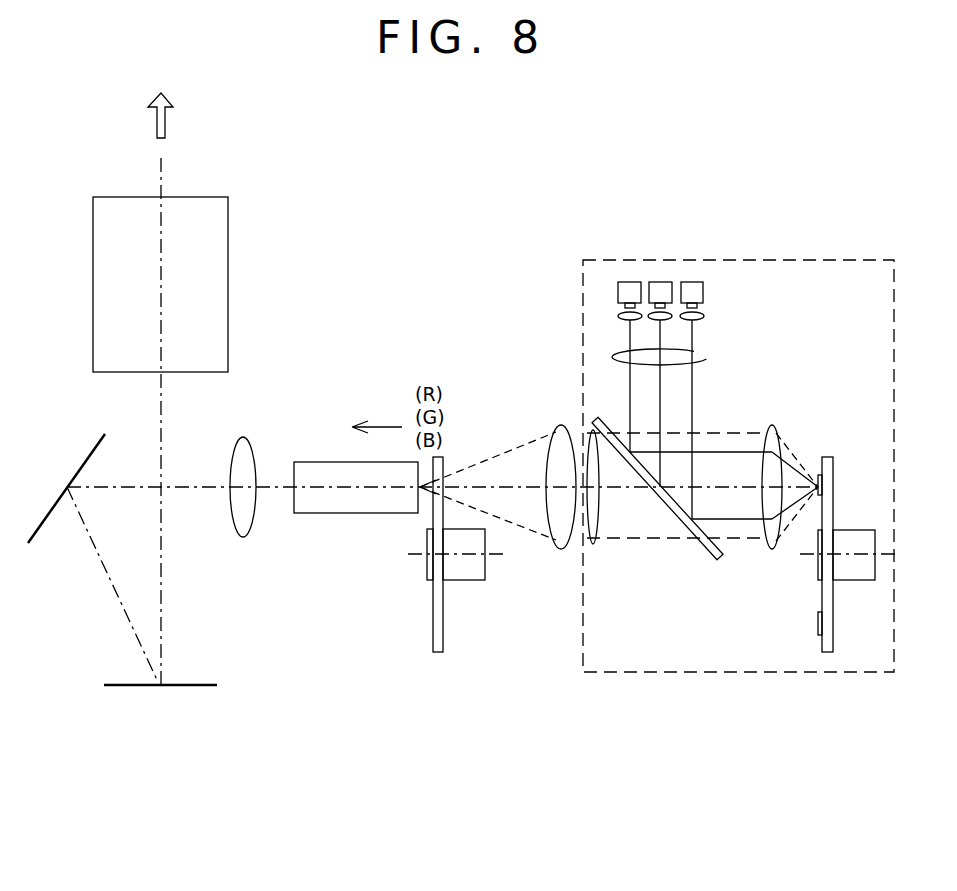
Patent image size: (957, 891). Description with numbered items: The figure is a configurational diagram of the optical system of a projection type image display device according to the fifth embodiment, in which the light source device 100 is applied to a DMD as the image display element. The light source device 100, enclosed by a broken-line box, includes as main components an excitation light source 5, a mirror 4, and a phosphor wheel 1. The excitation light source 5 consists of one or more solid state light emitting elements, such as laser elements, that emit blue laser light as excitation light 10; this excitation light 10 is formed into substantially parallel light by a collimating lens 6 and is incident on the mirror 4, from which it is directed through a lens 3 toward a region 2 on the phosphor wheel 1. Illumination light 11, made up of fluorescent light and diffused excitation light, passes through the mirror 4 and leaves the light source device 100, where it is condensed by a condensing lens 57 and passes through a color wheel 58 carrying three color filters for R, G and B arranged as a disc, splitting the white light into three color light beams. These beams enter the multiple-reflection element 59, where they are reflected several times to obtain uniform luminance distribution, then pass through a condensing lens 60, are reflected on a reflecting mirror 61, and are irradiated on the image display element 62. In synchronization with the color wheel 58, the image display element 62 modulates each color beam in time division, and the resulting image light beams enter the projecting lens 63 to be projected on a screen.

The phosphor wheel 1 is at (834, 500).
The light emitting element 2 is at (820, 472).
The lens 3 is at (770, 428).
The mirror 4 is at (672, 510).
The excitation light source 5 is at (704, 291).
The collimating lens 6 is at (705, 317).
The excitation light 10 is at (678, 358).
The illumination light 11 is at (603, 504).
The condensing lens 57 is at (563, 550).
The color wheel 58 is at (440, 653).
The multiple-reflection element 59 is at (345, 515).
The condensing lens 60 is at (246, 540).
The reflecting mirror 61 is at (82, 466).
The image display element 62 is at (183, 687).
The projecting lens 63 is at (229, 263).
The light source device 100 is at (725, 260).